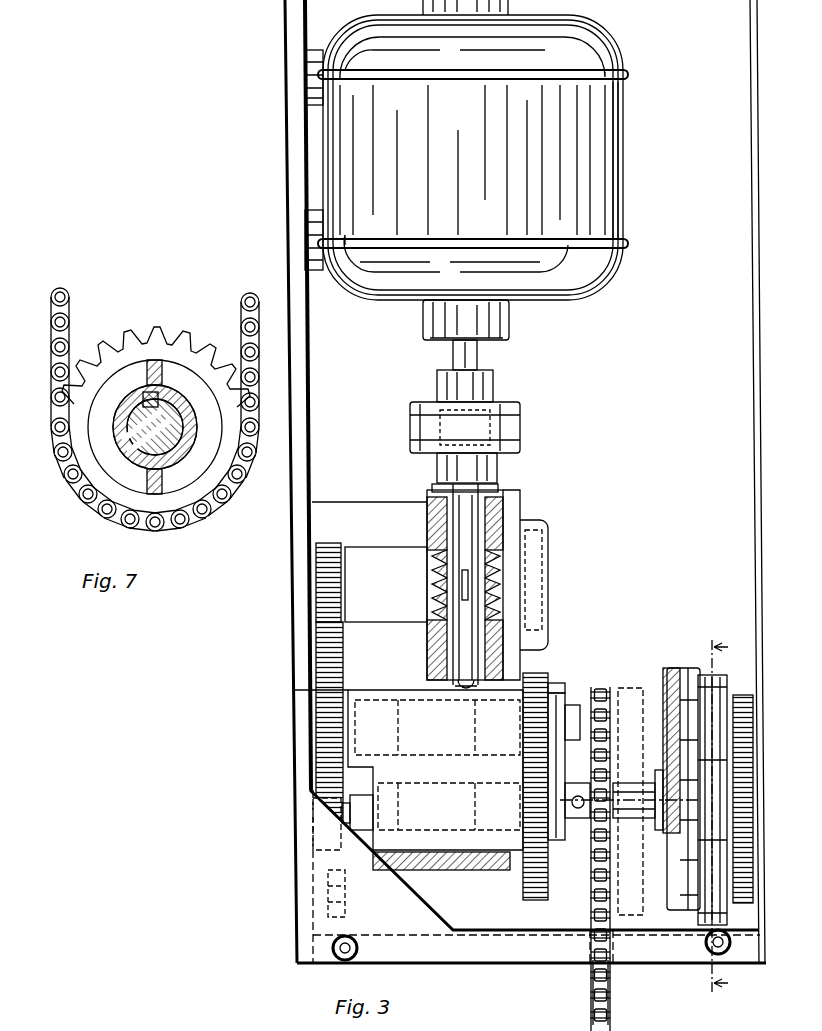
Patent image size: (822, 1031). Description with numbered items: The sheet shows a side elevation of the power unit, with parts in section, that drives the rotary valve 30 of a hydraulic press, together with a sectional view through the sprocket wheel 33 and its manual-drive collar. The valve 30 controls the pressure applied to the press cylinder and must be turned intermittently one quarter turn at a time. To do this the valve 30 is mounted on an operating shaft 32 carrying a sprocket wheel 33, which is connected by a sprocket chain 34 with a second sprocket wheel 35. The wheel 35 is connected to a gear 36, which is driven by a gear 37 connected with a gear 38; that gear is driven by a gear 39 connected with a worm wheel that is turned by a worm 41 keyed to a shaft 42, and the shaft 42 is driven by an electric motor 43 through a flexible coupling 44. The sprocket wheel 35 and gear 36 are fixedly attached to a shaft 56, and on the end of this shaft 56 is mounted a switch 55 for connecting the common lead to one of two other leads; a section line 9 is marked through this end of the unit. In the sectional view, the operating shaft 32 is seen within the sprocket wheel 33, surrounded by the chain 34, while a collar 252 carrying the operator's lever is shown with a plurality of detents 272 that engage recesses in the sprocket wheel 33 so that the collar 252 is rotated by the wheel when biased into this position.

In FIG. 3, the rotary valve 30 is at (291, 590).
In FIG. 3, the electric motor 43 is at (612, 155).
In FIG. 3, the flexible coupling 44 is at (520, 412).
In FIG. 3, the shaft 42 is at (478, 527).
In FIG. 3, the worm 41 is at (500, 585).
In FIG. 3, the gear 39 is at (316, 582).
In FIG. 3, the gear 38 is at (316, 690).
In FIG. 3, the gear 36 is at (523, 878).
In FIG. 3, the gear 37 is at (551, 690).
In FIG. 3, the sprocket wheel 35 is at (606, 700).
In FIG. 3, the sprocket chain 34 is at (585, 983).
In FIG. 7, the sprocket chain 34 is at (50, 322).
In FIG. 3, the shaft 56 is at (633, 781).
In FIG. 3, the switch 55 is at (696, 640).
In FIG. 3, the section line 9 is at (727, 817).
In FIG. 7, the sprocket wheel 33 is at (230, 440).
In FIG. 7, the operating shaft 32 is at (168, 407).
In FIG. 7, the detents 272 is at (147, 378).
In FIG. 7, the collar 252 is at (123, 460).